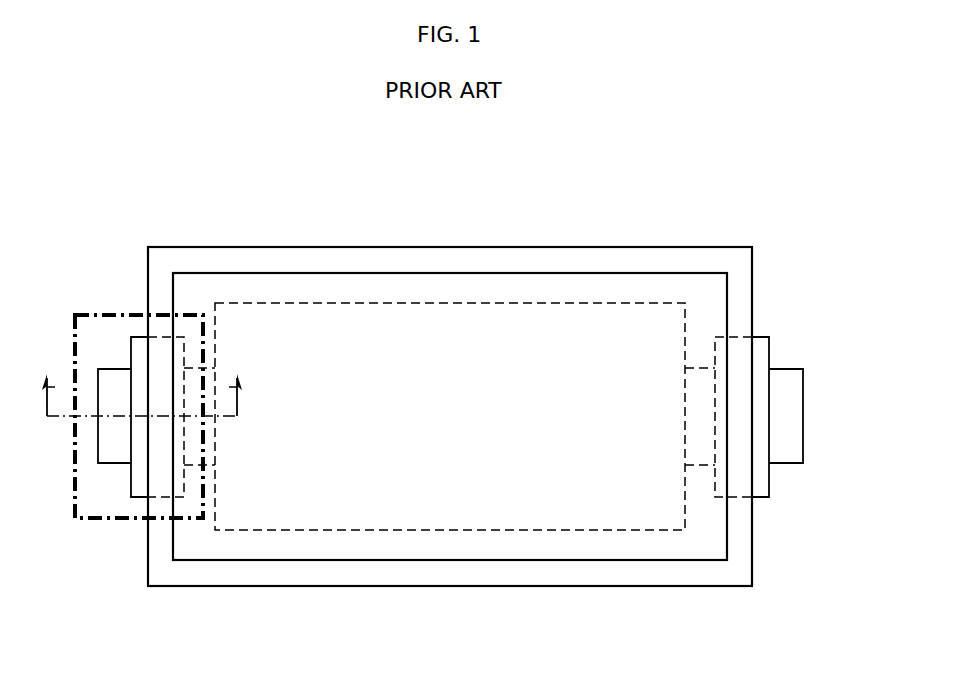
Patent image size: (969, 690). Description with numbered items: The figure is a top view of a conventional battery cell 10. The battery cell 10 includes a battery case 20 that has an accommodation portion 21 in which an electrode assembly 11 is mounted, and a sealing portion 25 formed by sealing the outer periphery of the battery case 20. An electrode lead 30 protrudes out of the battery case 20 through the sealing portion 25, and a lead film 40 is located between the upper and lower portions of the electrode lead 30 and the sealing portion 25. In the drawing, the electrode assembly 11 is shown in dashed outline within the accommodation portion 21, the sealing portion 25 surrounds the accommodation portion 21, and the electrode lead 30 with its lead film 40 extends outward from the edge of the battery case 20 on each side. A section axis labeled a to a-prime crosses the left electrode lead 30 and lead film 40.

The battery cell 10 is at (165, 178).
The electrode assembly 11 is at (465, 303).
The battery case 20 is at (450, 457).
The accommodation portion 21 is at (493, 627).
The sealing portion 25 is at (475, 567).
The electrode lead 30 is at (101, 450).
The lead film 40 is at (136, 481).